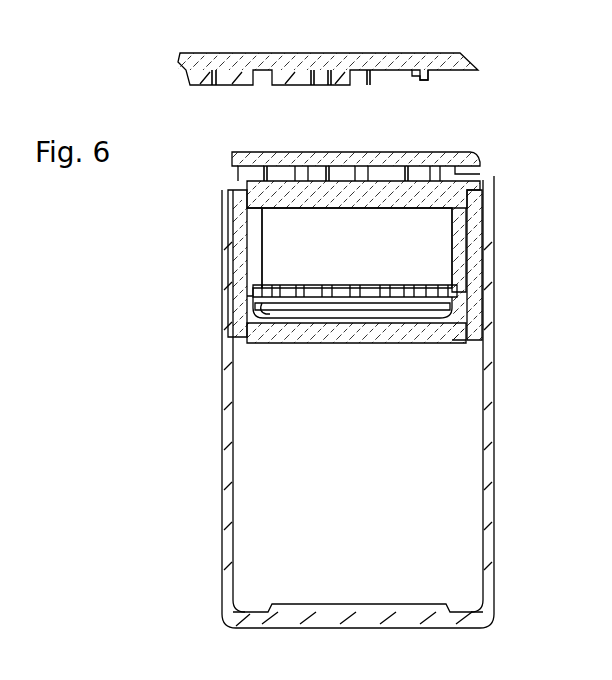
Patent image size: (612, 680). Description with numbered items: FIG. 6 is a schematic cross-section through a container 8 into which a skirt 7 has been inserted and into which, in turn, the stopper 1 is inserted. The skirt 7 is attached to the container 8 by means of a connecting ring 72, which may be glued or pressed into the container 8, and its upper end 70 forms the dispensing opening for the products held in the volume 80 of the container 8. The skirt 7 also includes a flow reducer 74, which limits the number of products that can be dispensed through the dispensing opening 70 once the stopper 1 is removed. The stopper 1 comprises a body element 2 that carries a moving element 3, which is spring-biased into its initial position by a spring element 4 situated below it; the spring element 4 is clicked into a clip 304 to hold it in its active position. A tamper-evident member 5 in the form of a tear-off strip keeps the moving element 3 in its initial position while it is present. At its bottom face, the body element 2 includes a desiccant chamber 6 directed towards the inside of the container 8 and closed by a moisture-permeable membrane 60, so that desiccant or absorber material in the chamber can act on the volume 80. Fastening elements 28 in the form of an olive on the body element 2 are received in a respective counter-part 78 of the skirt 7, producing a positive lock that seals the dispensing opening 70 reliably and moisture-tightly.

The stopper 1 is at (478, 150).
The body element 2 is at (458, 226).
The moving element 3 is at (362, 58).
The spring element 4 is at (226, 78).
The tamper-evident member 5 is at (492, 160).
The desiccant chamber 6 is at (350, 251).
The skirt 7 is at (480, 311).
The container 8 is at (486, 448).
The fastening element 28 is at (252, 288).
The moisture-permeable membrane 60 is at (378, 308).
The upper end / dispensing opening 70 is at (484, 194).
The connecting ring 72 is at (250, 240).
The flow reducer 74 is at (380, 320).
The counter-part 78 is at (243, 255).
The volume 80 is at (362, 463).
The clip 304 is at (428, 76).